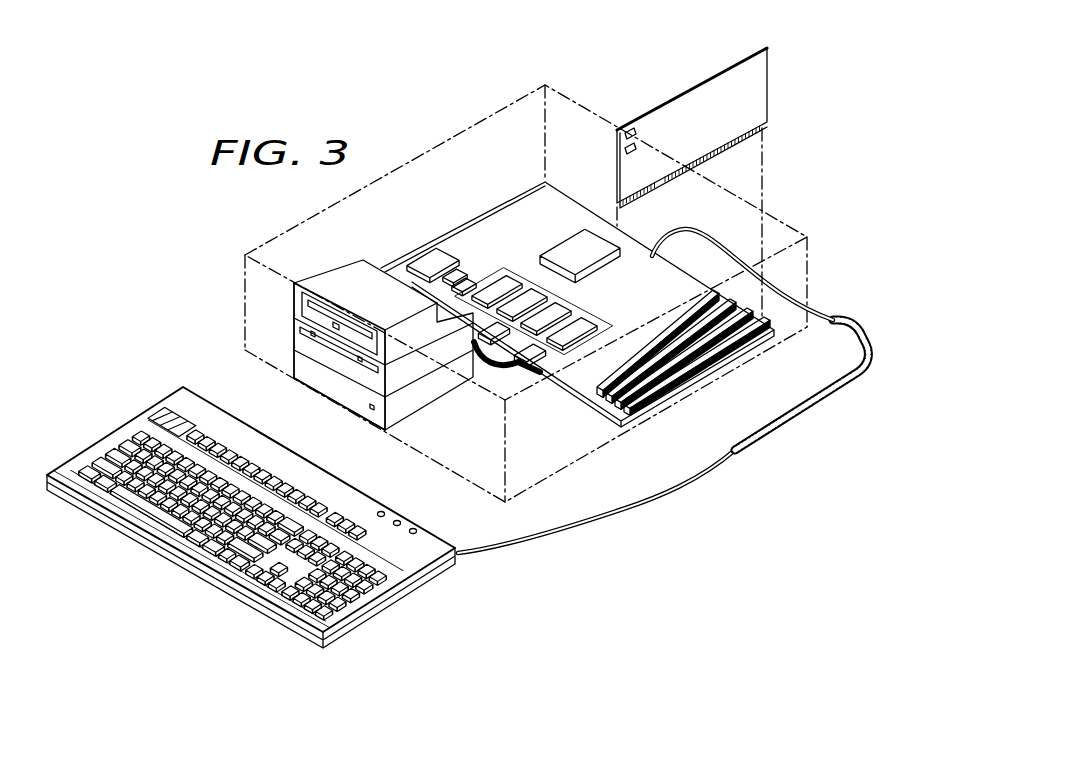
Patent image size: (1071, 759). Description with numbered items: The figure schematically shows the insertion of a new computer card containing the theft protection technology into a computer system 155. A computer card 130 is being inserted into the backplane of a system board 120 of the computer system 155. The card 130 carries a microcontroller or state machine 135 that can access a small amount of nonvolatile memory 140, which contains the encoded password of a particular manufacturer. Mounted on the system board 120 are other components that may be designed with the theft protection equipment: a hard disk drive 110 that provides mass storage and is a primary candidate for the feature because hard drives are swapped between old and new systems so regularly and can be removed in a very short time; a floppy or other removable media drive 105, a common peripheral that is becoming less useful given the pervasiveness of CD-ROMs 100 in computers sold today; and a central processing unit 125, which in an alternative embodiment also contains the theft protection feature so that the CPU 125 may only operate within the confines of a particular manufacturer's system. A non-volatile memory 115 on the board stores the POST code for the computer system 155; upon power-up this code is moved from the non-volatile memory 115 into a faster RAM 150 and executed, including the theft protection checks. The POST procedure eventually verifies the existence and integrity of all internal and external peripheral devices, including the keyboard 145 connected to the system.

The CD-ROM 100 is at (294, 300).
The floppy drive 105 is at (335, 364).
The hard disk drive 110 is at (366, 413).
The non-volatile memory 115 is at (432, 262).
The system board 120 is at (479, 122).
The central processing unit 125 is at (589, 240).
The computer card 130 is at (688, 90).
The microcontroller or state machine 135 is at (628, 130).
The nonvolatile memory 140 is at (633, 148).
The keyboard 145 is at (95, 452).
The RAM 150 is at (463, 276).
The computer system 155 is at (195, 270).